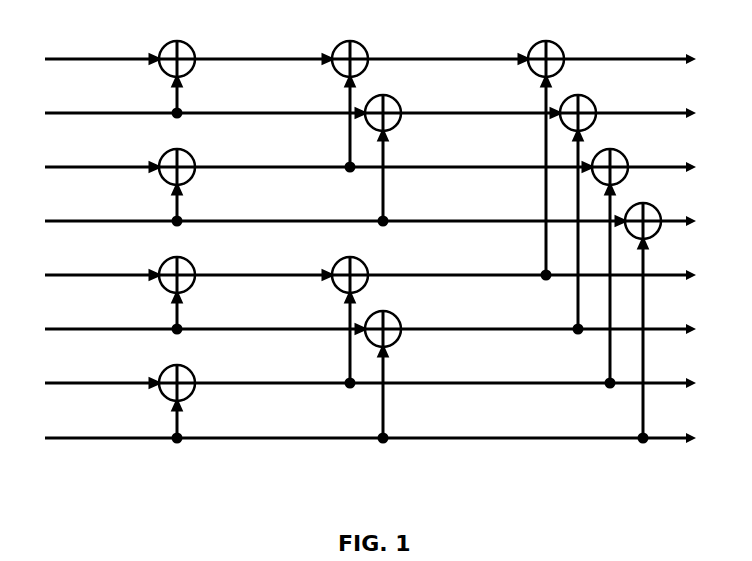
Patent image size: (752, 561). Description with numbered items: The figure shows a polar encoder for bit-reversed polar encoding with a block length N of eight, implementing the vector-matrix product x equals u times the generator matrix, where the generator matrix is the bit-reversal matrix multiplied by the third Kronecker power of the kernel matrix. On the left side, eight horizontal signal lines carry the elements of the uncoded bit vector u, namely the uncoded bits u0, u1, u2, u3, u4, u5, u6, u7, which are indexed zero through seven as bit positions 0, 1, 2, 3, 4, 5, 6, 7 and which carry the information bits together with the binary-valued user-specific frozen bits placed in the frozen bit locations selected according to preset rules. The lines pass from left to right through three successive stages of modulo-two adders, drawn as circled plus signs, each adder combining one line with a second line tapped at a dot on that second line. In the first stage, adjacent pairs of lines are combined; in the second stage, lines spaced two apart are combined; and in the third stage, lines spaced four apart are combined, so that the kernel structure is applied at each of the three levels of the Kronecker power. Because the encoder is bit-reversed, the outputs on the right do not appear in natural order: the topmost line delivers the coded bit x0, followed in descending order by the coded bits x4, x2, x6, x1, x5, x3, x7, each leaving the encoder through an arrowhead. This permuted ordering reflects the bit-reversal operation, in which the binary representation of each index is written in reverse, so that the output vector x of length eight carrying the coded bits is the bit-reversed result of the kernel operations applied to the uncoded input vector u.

The uncoded bit u0 0 is at (356, 46).
The uncoded bit u1 1 is at (356, 100).
The uncoded bit u2 2 is at (356, 154).
The uncoded bit u3 3 is at (356, 208).
The uncoded bit u4 4 is at (356, 262).
The uncoded bit u5 5 is at (356, 316).
The uncoded bit u6 6 is at (356, 370).
The uncoded bit u7 7 is at (356, 425).
The uncoded bit u0 is at (356, 46).
The uncoded bit u1 is at (356, 100).
The uncoded bit u2 is at (356, 154).
The uncoded bit u3 is at (356, 208).
The uncoded bit u4 is at (356, 262).
The uncoded bit u5 is at (356, 316).
The uncoded bit u6 is at (356, 370).
The uncoded bit u7 is at (356, 425).
The coded bit x0 is at (698, 47).
The coded bit x1 is at (698, 263).
The coded bit x2 is at (698, 155).
The coded bit x3 is at (698, 371).
The coded bit x4 is at (698, 101).
The coded bit x5 is at (698, 317).
The coded bit x6 is at (698, 209).
The coded bit x7 is at (698, 426).